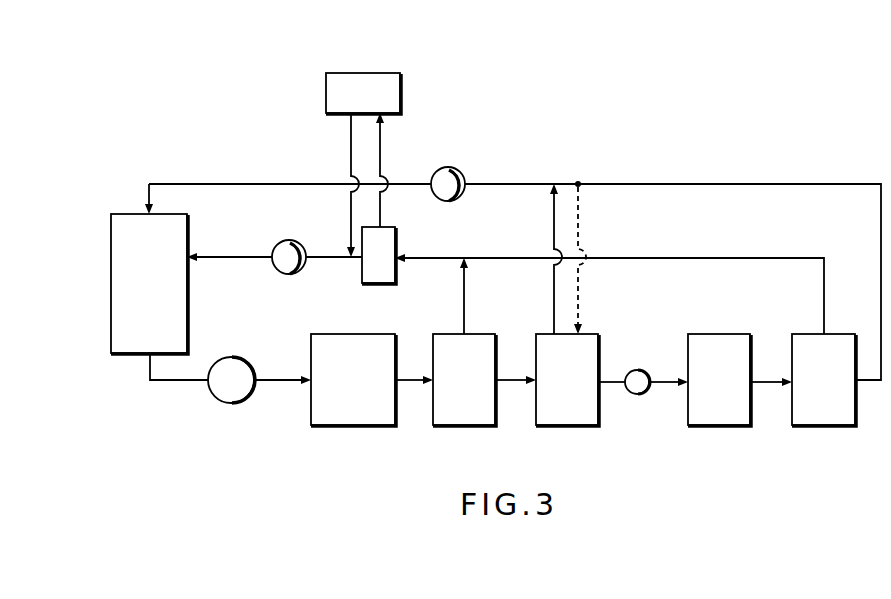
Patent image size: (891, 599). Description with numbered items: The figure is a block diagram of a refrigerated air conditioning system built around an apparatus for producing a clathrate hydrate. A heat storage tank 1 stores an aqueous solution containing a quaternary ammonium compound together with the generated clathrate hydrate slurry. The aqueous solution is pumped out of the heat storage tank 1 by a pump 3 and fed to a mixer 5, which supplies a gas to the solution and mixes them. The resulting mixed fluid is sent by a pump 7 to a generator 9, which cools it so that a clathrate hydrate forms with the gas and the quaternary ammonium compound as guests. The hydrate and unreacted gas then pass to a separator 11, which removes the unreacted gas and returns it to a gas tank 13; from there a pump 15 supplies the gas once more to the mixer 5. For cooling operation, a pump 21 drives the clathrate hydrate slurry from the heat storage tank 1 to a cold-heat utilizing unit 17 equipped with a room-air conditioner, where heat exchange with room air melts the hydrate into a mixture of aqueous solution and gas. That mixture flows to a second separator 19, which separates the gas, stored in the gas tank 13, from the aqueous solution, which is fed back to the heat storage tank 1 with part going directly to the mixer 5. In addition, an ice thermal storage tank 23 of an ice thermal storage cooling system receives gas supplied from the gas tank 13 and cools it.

The heat storage tank 1 is at (590, 334).
The pump 3 is at (460, 170).
The mixer 5 is at (111, 278).
The pump 7 is at (242, 357).
The generator 9 is at (372, 334).
The separator 11 is at (478, 334).
The gas tank 13 is at (386, 227).
The pump 15 is at (300, 243).
The cold-heat utilizing unit 17 is at (730, 334).
The second separator 19 is at (828, 334).
The pump 21 is at (645, 371).
The ice thermal storage tank 23 is at (384, 73).